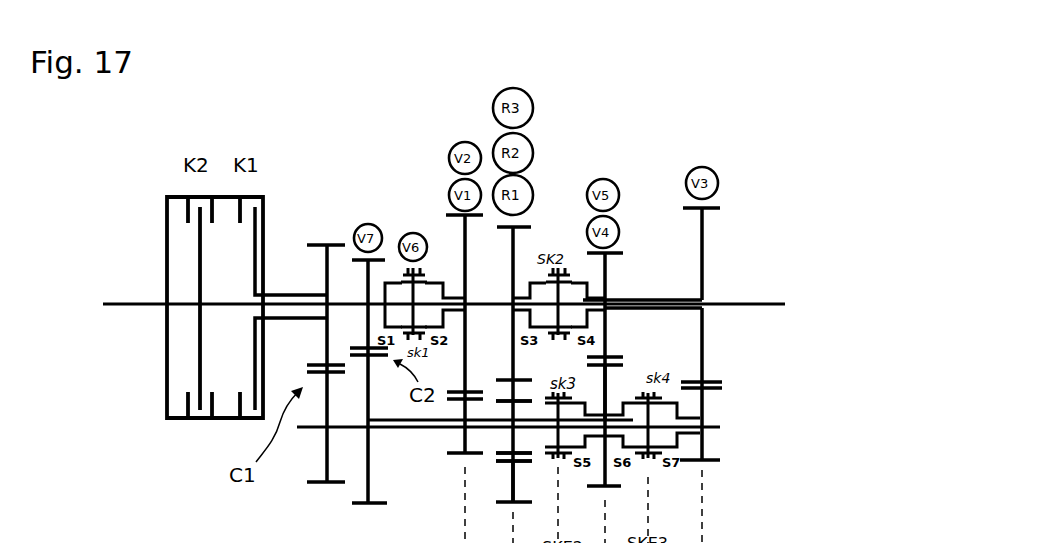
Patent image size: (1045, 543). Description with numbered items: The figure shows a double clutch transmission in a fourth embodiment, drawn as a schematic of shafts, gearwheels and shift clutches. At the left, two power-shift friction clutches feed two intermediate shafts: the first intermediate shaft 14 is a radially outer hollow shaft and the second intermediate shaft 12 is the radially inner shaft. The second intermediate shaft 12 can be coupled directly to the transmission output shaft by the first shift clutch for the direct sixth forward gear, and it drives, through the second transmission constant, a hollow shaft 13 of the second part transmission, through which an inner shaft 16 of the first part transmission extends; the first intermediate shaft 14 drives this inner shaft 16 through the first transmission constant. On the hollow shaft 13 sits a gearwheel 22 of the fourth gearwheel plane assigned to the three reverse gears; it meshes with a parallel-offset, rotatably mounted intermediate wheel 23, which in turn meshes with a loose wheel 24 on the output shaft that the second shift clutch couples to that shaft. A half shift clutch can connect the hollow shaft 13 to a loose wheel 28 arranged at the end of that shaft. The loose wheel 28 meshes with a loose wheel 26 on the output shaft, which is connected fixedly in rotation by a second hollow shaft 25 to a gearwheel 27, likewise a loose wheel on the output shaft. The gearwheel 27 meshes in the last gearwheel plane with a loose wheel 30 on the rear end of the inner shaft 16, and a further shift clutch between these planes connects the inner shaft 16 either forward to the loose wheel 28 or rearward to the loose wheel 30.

The second intermediate shaft 12 is at (347, 300).
The hollow shaft 13 is at (418, 433).
The first intermediate shaft 14 is at (283, 292).
The inner shaft 16 is at (343, 432).
The gearwheel 22 is at (511, 410).
The intermediate wheel 23 is at (512, 481).
The loose wheel 24 is at (513, 255).
The second hollow shaft 25 is at (637, 296).
The loose wheel 26 is at (606, 272).
The gearwheel 27 is at (704, 253).
The loose wheel 28 is at (606, 387).
The loose wheel 30 is at (703, 404).